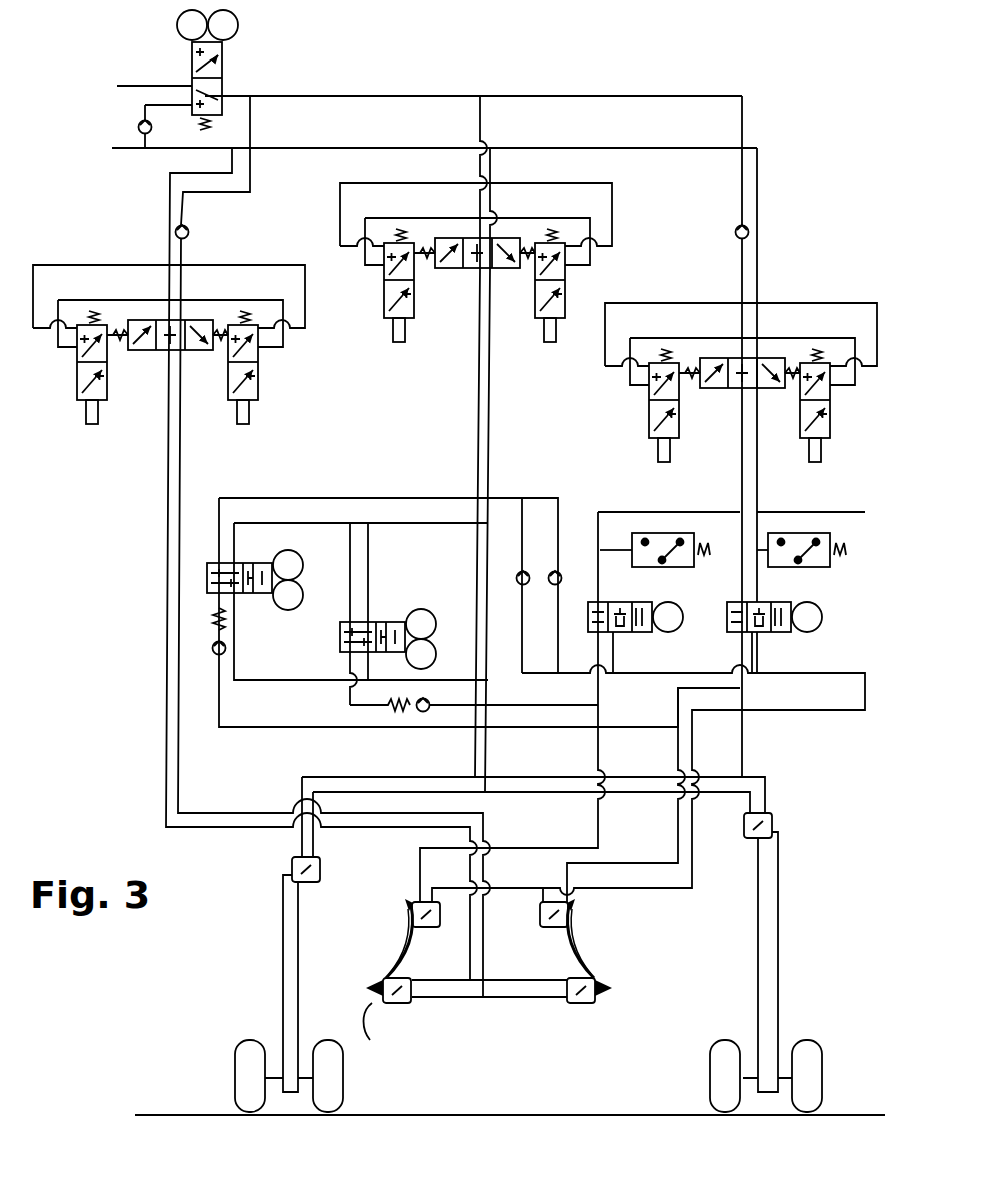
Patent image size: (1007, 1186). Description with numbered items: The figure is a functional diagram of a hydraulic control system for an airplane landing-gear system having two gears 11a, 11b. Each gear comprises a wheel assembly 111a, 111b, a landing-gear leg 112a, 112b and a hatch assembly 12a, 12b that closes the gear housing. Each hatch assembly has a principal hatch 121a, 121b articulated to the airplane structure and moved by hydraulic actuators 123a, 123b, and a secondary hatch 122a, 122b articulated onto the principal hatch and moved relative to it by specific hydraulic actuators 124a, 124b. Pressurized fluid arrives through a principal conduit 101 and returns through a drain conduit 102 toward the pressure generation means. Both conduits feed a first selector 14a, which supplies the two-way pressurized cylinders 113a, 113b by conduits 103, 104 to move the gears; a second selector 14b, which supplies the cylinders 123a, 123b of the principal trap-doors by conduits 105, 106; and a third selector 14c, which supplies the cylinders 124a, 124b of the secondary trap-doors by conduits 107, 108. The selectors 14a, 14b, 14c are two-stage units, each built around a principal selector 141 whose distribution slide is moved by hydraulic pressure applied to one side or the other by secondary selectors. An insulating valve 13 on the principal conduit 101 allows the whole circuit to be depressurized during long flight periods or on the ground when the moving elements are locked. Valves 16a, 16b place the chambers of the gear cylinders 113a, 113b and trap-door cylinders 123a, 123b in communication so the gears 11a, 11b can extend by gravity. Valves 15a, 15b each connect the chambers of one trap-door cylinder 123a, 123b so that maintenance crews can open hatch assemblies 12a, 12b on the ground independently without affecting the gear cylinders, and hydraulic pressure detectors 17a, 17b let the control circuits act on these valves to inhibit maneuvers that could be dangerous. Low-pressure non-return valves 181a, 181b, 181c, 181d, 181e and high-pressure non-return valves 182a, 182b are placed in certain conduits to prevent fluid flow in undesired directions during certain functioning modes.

The insulating valve 13 is at (238, 72).
The principal conduit 101 is at (152, 86).
The drain conduit 102 is at (131, 150).
The conduit 103 is at (477, 420).
The conduit 104 is at (490, 368).
The conduit 105 is at (740, 408).
The conduit 106 is at (757, 407).
The conduit 107 is at (166, 485).
The conduit 108 is at (182, 433).
The first selector 14a is at (447, 322).
The second selector 14b is at (797, 318).
The third selector 14c is at (140, 412).
The valve 15a is at (756, 635).
The valve 15b is at (635, 632).
The valve 16a is at (265, 565).
The valve 16b is at (385, 622).
The hydraulic pressure detector 17a is at (800, 540).
The hydraulic pressure detector 17b is at (658, 538).
The low-pressure non-return valve 181a is at (138, 127).
The low-pressure non-return valve 181b is at (175, 232).
The low-pressure non-return valve 181c is at (736, 232).
The low-pressure non-return valve 181d is at (556, 570).
The low-pressure non-return valve 181e is at (523, 570).
The high-pressure non-return valve 182a is at (212, 648).
The high-pressure non-return valve 182b is at (421, 712).
The landing gear 11a is at (284, 1127).
The landing gear 11b is at (768, 1128).
The wheel assembly 111a is at (242, 1088).
The wheel assembly 111b is at (825, 1078).
The landing-gear leg 112a is at (283, 990).
The landing-gear leg 112b is at (778, 930).
The two-way hydraulic cylinder 113a is at (292, 865).
The two-way hydraulic cylinder 113b is at (775, 826).
The hatch assembly 12a is at (422, 1060).
The hatch assembly 12b is at (598, 1062).
The principal hatch 121a is at (410, 930).
The principal hatch 121b is at (575, 945).
The secondary hatch 122a is at (384, 1053).
The secondary hatch 122b is at (605, 985).
The hydraulic actuator 123a is at (410, 915).
The hydraulic actuator 123b is at (570, 915).
The hydraulic actuator 124a is at (410, 1000).
The hydraulic actuator 124b is at (582, 1002).
The principal selector 141 is at (510, 1150).